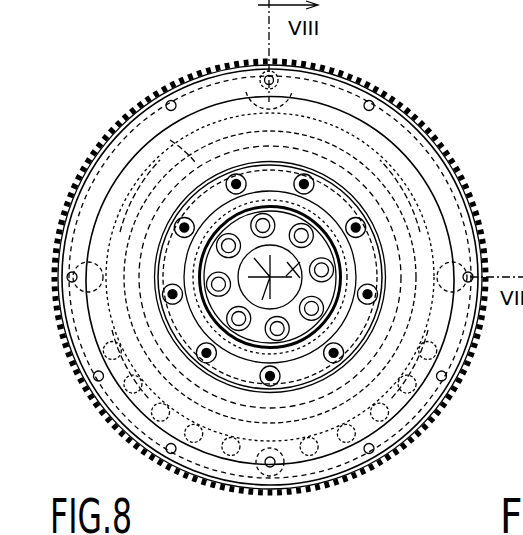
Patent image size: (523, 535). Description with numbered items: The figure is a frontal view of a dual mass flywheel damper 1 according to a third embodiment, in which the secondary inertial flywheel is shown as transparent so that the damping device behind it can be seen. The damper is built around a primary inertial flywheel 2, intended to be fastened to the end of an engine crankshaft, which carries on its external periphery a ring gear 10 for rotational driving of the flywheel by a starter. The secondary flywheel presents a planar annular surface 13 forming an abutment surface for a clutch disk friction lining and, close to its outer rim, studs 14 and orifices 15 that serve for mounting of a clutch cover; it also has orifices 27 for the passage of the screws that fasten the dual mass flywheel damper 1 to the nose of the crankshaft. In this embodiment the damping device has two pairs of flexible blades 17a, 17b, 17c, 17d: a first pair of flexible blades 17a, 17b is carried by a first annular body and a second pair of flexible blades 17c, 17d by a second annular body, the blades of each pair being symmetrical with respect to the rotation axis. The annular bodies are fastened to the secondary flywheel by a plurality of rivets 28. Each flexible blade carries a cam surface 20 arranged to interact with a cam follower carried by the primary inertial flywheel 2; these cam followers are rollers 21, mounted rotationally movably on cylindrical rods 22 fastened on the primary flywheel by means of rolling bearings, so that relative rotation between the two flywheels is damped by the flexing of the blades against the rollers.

The dual mass flywheel damper 1 is at (101, 98).
The primary inertial flywheel 2 is at (363, 88).
The ring gear 10 is at (125, 440).
The planar annular surface 13 is at (383, 165).
The studs 14 is at (266, 78).
The orifices 15 is at (465, 270).
The flexible blade 17a is at (192, 158).
The flexible blade 17b is at (342, 395).
The flexible blade 17c is at (100, 379).
The flexible blade 17d is at (392, 204).
The cam surface 20 is at (322, 78).
The roller 21 is at (292, 90).
The cylindrical rod 22 is at (270, 462).
The orifices 27 is at (180, 271).
The rivets 28 is at (176, 223).